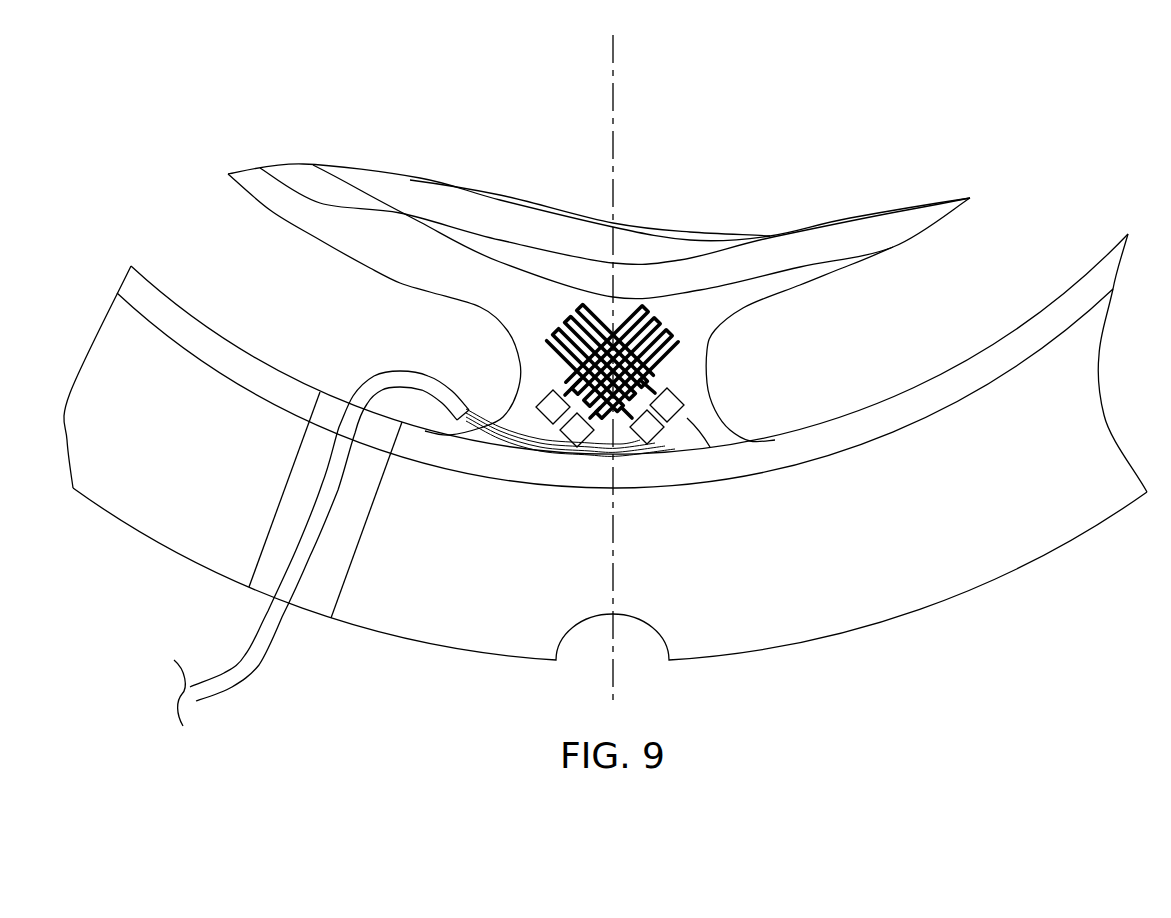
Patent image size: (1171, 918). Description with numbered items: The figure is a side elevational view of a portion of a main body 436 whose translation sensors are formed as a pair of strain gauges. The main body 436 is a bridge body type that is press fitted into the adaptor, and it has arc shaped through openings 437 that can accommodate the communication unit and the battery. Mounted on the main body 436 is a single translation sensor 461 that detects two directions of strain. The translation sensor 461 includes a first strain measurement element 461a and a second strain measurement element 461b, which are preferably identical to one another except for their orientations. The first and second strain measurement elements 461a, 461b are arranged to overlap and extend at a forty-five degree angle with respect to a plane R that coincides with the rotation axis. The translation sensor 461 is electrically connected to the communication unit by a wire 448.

The main body 436 is at (973, 603).
The arc shaped through openings 437 is at (895, 249).
The wire 448 is at (252, 680).
The translation sensor 461 is at (680, 161).
The first strain measurement element 461a is at (580, 306).
The second strain measurement element 461b is at (657, 305).
The plane R is at (613, 67).